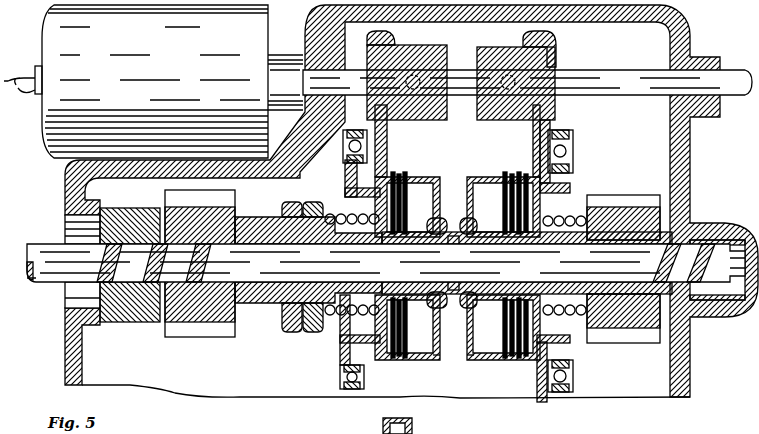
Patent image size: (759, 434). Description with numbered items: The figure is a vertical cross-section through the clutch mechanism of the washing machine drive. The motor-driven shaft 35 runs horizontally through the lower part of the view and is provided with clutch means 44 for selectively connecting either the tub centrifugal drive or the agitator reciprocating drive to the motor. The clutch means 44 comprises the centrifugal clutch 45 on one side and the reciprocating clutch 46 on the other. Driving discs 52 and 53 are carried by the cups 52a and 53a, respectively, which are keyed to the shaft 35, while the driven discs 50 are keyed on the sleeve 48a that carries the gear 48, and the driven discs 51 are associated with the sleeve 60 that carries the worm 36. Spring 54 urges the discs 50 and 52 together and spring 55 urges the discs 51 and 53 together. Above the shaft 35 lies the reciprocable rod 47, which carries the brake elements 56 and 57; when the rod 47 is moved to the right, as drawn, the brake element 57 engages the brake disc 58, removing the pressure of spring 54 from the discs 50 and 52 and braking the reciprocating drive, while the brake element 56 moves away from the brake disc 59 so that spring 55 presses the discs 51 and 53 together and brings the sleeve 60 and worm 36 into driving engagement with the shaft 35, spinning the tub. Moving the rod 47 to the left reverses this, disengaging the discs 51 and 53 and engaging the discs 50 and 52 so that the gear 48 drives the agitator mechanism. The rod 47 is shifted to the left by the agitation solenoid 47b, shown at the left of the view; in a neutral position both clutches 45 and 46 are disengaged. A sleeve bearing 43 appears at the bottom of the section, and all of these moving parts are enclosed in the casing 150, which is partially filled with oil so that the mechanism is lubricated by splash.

The shaft 35 is at (50, 284).
The worm 36 is at (197, 338).
The sleeve bearing 43 is at (420, 426).
The clutch means 44 is at (474, 150).
The centrifugal clutch 45 is at (417, 178).
The reciprocating clutch 46 is at (486, 180).
The reciprocable rod 47 is at (612, 82).
The agitation solenoid 47b is at (78, 138).
The gear 48 is at (622, 206).
The sleeve 48a is at (613, 300).
The driven discs 50 is at (488, 350).
The driven discs 51 is at (412, 348).
The driving discs 52 is at (512, 360).
The cup 52a is at (465, 360).
The driving discs 53 is at (395, 360).
The cup 53a is at (433, 362).
The spring 54 is at (577, 213).
The spring 55 is at (345, 217).
The brake element 56 is at (387, 134).
The brake element 57 is at (537, 135).
The brake disc 58 is at (557, 131).
The brake disc 59 is at (343, 166).
The sleeve 60 is at (260, 303).
The casing 150 is at (692, 338).